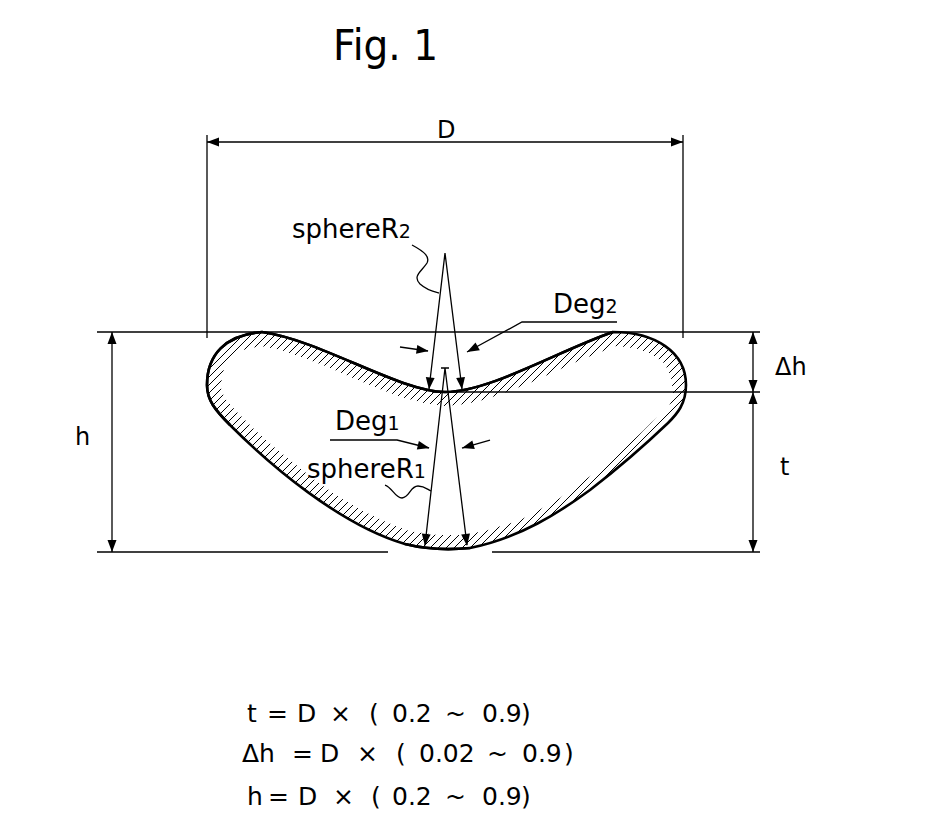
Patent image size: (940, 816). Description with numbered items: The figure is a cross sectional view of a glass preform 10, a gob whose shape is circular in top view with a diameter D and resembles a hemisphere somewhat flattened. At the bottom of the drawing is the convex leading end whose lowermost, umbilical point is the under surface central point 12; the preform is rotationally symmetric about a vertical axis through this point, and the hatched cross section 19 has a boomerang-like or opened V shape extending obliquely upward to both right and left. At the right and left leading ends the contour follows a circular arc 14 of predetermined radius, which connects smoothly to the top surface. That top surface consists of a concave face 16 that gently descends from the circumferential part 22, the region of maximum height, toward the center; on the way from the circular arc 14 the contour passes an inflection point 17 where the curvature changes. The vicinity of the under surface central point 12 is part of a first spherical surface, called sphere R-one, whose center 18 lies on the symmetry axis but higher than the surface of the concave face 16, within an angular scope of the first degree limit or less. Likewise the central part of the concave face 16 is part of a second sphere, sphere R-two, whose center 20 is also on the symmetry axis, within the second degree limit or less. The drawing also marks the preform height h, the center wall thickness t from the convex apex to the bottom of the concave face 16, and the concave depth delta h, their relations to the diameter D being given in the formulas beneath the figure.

The preform 10 is at (828, 237).
The under surface central point 12 is at (445, 549).
The circular arc 14 is at (233, 338).
The concave face 16 is at (481, 383).
The inflection point 17 is at (343, 363).
The center of sphere R1 18 is at (442, 370).
The cross section 19 is at (563, 460).
The center of sphere R2 20 is at (447, 252).
The circumferential part 22 is at (363, 332).